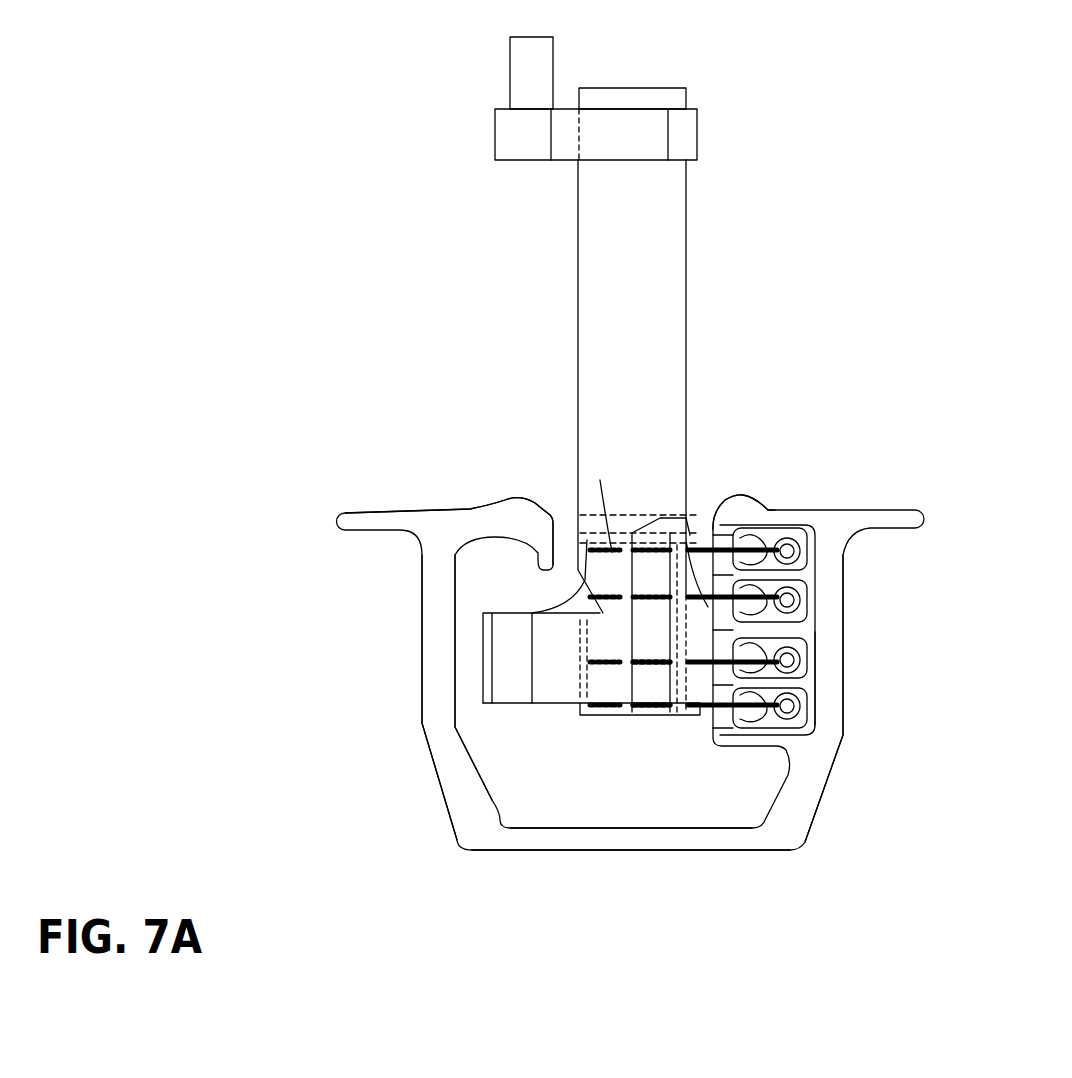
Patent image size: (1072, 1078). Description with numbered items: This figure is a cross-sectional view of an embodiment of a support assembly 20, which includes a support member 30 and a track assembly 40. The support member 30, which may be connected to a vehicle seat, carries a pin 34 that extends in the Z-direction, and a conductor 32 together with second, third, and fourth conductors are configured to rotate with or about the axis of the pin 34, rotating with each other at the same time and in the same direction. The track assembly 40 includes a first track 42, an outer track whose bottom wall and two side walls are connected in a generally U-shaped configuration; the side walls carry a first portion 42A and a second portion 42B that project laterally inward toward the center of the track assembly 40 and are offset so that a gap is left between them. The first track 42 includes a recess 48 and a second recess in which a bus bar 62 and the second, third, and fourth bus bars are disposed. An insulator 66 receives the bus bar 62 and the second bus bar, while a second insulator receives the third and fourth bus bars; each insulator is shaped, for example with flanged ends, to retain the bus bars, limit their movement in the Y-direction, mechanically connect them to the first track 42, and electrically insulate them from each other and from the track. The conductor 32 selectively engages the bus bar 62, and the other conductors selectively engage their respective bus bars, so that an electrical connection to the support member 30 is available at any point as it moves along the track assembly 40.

The support assembly 20 is at (808, 136).
The support member 30 is at (810, 340).
The pin 34 is at (688, 290).
The conductor 32 is at (612, 555).
The track assembly 40 is at (975, 502).
The first track 42 is at (876, 520).
The first portion 42A is at (778, 503).
The second portion 42B is at (502, 503).
The recess 48 is at (817, 571).
The bus bar 62 is at (818, 548).
The insulator 66 is at (800, 577).